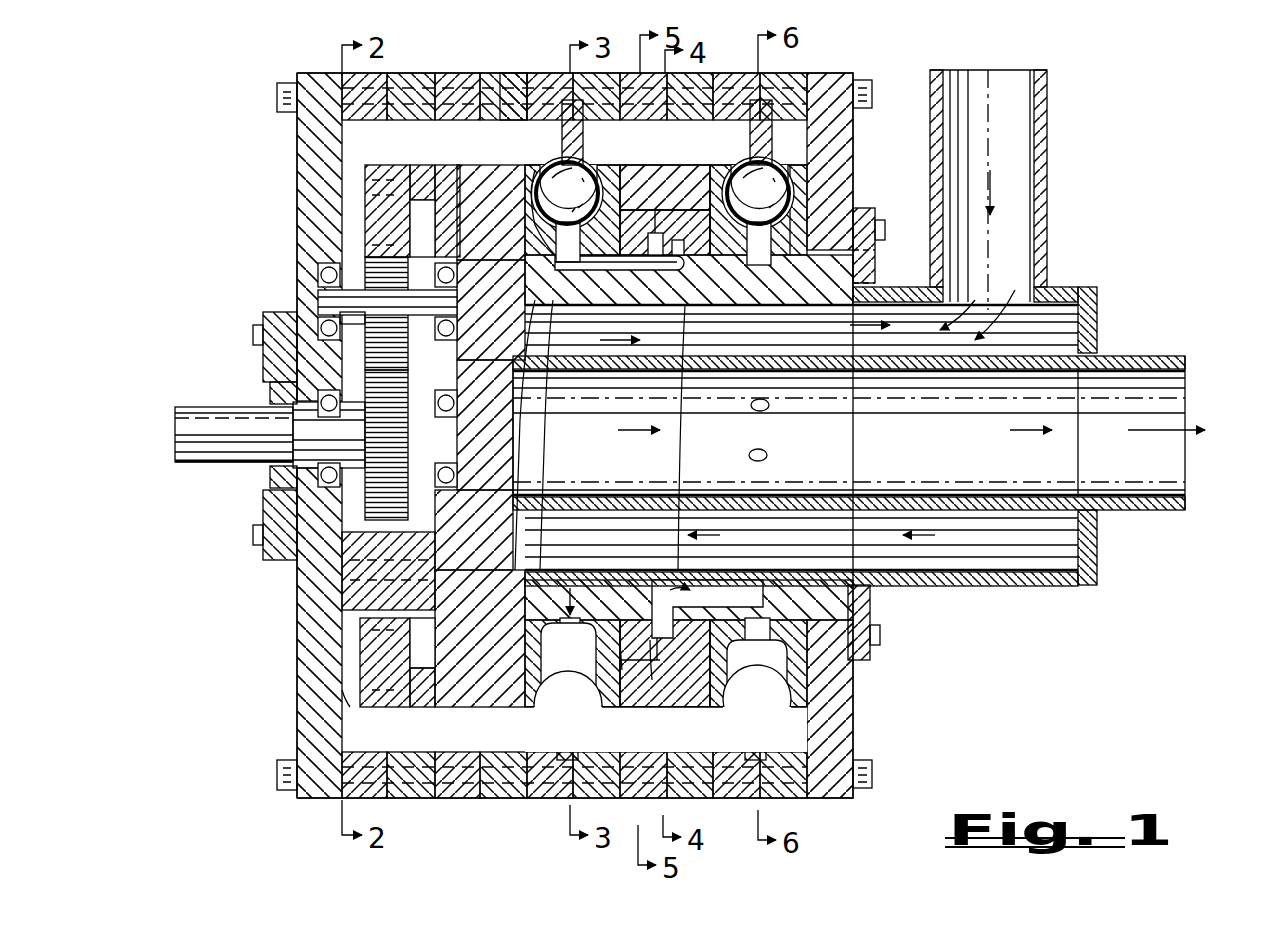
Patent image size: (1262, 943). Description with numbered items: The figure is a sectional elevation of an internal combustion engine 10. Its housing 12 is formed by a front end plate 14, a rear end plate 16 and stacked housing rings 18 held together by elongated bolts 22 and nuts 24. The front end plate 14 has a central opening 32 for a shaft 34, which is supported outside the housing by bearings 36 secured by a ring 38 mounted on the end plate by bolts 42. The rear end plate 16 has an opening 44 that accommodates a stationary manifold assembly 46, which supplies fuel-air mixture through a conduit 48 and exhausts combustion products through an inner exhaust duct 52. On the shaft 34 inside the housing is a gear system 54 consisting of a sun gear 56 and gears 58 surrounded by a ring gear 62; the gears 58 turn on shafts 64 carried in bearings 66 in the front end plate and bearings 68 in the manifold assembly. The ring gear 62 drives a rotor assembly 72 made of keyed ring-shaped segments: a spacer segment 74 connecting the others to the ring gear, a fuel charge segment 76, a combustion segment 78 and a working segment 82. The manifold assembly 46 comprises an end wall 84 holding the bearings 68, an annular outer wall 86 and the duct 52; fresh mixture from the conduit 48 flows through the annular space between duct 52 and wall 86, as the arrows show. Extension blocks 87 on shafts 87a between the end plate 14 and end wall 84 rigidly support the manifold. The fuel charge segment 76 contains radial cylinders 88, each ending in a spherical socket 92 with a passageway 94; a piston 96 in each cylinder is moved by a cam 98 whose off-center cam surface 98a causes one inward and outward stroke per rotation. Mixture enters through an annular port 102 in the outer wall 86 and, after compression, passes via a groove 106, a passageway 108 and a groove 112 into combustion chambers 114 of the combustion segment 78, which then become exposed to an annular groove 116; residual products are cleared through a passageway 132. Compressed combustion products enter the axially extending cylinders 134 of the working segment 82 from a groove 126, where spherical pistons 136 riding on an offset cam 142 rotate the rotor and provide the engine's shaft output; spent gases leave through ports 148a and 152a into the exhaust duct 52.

The internal combustion engine 10 is at (212, 598).
The housing 12 is at (295, 722).
The front end plate 14 is at (297, 165).
The rear end plate 16 is at (853, 140).
The housing rings 18 is at (458, 73).
The elongated bolts 22 is at (282, 83).
The nuts 24 is at (872, 84).
The central opening 32 is at (297, 575).
The shaft 34 is at (186, 465).
The bearings 36 is at (275, 470).
The ring 38 is at (270, 312).
The bolts 42 is at (253, 335).
The opening 44 is at (870, 605).
The manifold assembly 46 is at (1050, 588).
The conduit 48 is at (1047, 110).
The exhaust duct 52 is at (1180, 520).
The gear system 54 is at (382, 165).
The sun gear 56 is at (365, 385).
The gears 58 is at (365, 275).
The ring gear 62 is at (365, 200).
The shafts 64 is at (318, 300).
The bearings 66 is at (340, 330).
The bearings 68 is at (520, 70).
The rotor assembly 72 is at (715, 165).
The spacer segment 74 is at (445, 165).
The fuel charge segment 76 is at (620, 165).
The combustion segment 78 is at (692, 200).
The working segment 82 is at (780, 170).
The end wall 84 is at (297, 402).
The annular outer wall 86 is at (862, 208).
The extension blocks 87 is at (340, 680).
The shafts 87a is at (300, 640).
The cylinders 88 is at (548, 175).
The spherical socket 92 is at (600, 175).
The passageway 94 is at (535, 170).
The piston 96 is at (562, 130).
The cam 98 is at (583, 120).
The cam surface 98a is at (557, 745).
The port 102 is at (500, 708).
The groove 106 is at (540, 265).
The passageway 108 is at (570, 270).
The groove 112 is at (683, 305).
The combustion chambers 114 is at (590, 270).
The groove 116 is at (622, 670).
The groove 126 is at (875, 262).
The passageway 132 is at (660, 600).
The cylinders 134 is at (750, 168).
The spherical pistons 136 is at (758, 445).
The cam 142 is at (766, 740).
The port 148a is at (752, 462).
The port 152a is at (770, 405).